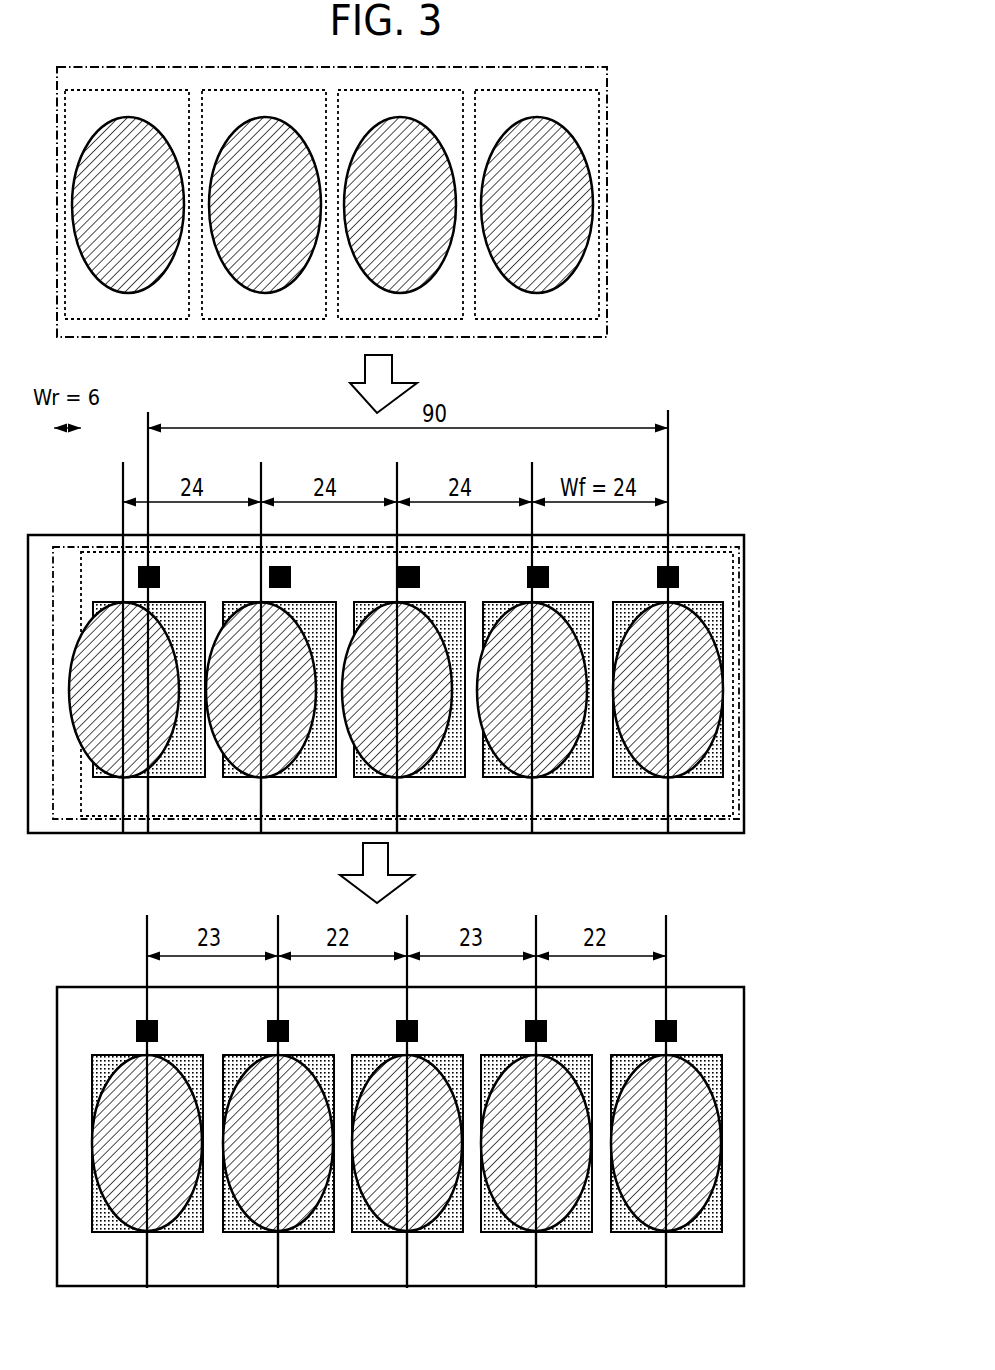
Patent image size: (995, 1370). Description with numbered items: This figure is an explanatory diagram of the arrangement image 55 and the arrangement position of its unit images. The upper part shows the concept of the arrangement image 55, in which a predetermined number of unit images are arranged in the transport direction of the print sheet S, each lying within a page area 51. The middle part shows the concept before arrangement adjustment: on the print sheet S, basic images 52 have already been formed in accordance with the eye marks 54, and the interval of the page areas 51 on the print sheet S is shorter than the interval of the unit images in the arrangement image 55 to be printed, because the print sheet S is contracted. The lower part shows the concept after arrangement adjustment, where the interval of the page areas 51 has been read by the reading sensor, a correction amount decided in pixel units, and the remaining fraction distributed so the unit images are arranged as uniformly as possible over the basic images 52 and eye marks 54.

The arrangement image 55 is at (608, 92).
The page area 51 is at (601, 128).
The print sheet S is at (718, 534).
The eye mark 54 is at (679, 577).
The basic image 52 is at (725, 622).